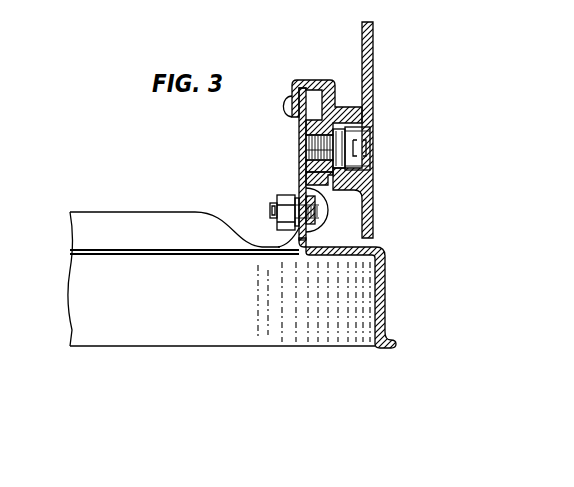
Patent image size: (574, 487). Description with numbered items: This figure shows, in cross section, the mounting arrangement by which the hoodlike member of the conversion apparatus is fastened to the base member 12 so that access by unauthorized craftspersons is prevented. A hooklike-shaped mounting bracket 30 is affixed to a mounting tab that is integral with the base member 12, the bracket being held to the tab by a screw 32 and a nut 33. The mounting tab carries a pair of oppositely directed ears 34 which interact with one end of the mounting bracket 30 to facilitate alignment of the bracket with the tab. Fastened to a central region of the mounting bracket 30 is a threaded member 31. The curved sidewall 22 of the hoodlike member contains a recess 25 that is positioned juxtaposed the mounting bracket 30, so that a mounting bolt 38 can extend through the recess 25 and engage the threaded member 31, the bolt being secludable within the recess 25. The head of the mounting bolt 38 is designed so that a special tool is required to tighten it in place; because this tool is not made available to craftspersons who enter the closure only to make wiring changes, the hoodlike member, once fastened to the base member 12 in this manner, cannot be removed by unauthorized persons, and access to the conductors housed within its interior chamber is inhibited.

The base member 12 is at (386, 301).
The curved sidewall 22 is at (375, 40).
The recess 25 is at (371, 165).
The mounting bracket 30 is at (318, 80).
The threaded member 31 is at (299, 129).
The screw 32 is at (326, 214).
The nut 33 is at (283, 195).
The ear 34 is at (285, 95).
The mounting bolt 38 is at (371, 135).